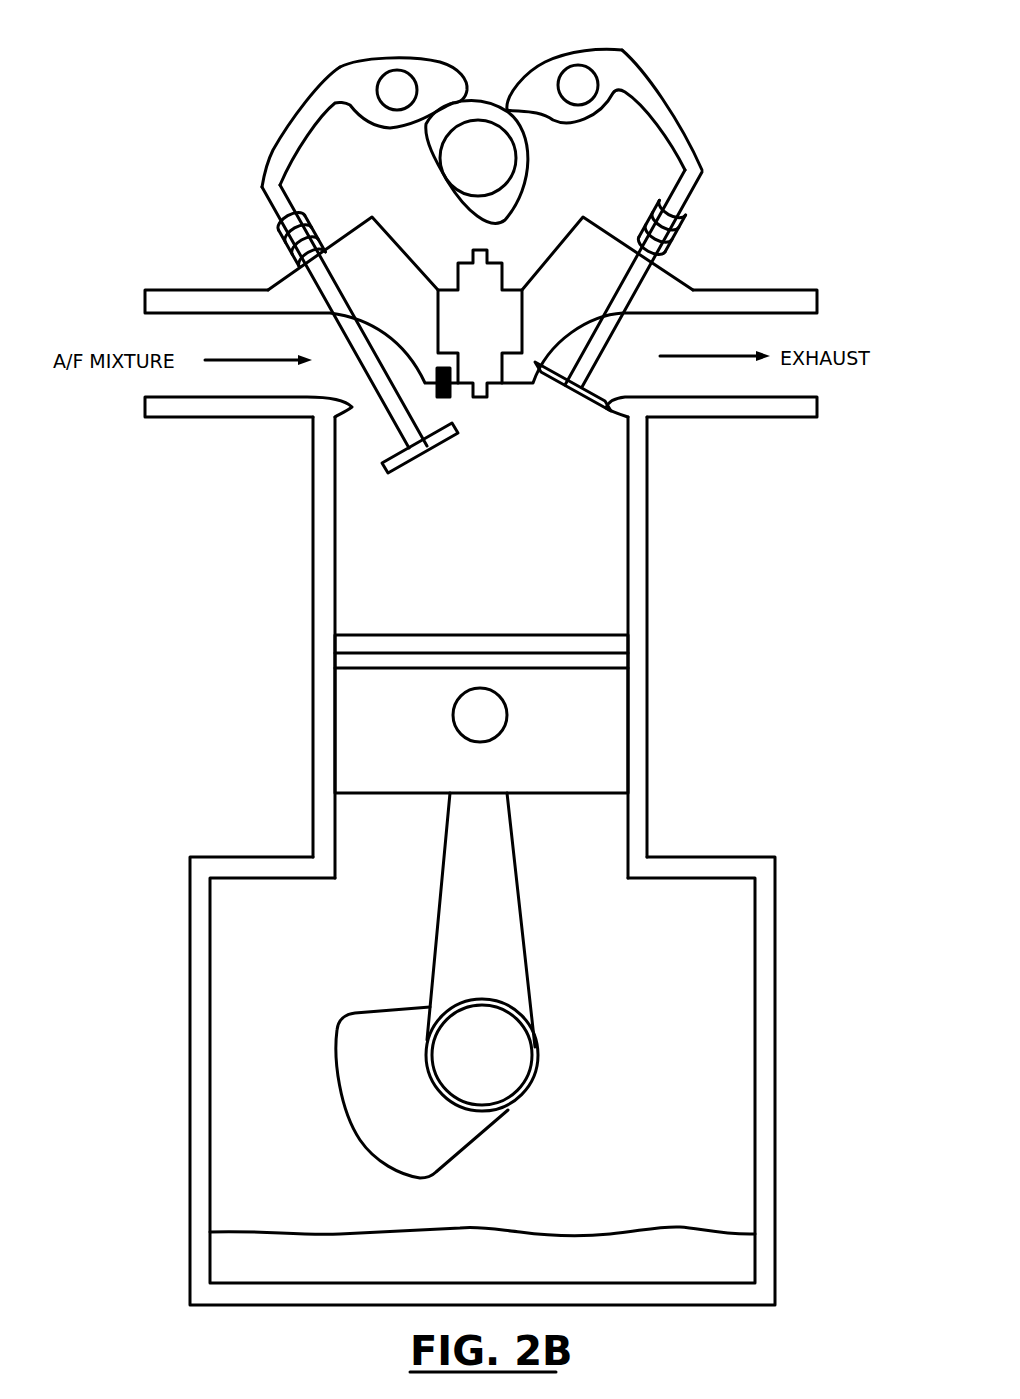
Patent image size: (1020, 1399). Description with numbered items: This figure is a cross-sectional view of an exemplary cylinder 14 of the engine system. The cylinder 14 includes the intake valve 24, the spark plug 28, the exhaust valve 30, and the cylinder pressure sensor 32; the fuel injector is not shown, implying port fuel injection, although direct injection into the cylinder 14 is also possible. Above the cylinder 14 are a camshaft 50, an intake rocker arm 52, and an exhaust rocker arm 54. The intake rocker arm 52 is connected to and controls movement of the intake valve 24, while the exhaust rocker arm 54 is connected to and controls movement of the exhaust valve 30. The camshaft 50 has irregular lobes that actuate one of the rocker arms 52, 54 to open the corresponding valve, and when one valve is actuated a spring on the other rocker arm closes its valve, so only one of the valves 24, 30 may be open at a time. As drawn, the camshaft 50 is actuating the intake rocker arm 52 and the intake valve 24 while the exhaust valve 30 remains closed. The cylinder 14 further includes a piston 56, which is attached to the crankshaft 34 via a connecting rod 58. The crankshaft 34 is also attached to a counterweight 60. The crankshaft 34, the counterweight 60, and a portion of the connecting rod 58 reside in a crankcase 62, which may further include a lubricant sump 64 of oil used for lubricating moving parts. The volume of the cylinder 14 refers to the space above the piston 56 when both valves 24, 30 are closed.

The cylinder 14 is at (647, 648).
The intake valve 24 is at (422, 450).
The spark plug 28 is at (523, 327).
The exhaust valve 30 is at (577, 397).
The cylinder pressure sensor 32 is at (437, 372).
The crankshaft 34 is at (535, 1080).
The camshaft 50 is at (552, 182).
The intake rocker arm 52 is at (399, 57).
The exhaust rocker arm 54 is at (577, 52).
The piston 56 is at (553, 795).
The connecting rod 58 is at (437, 935).
The counterweight 60 is at (360, 1133).
The crankcase 62 is at (757, 993).
The lubricant sump 64 is at (588, 1235).